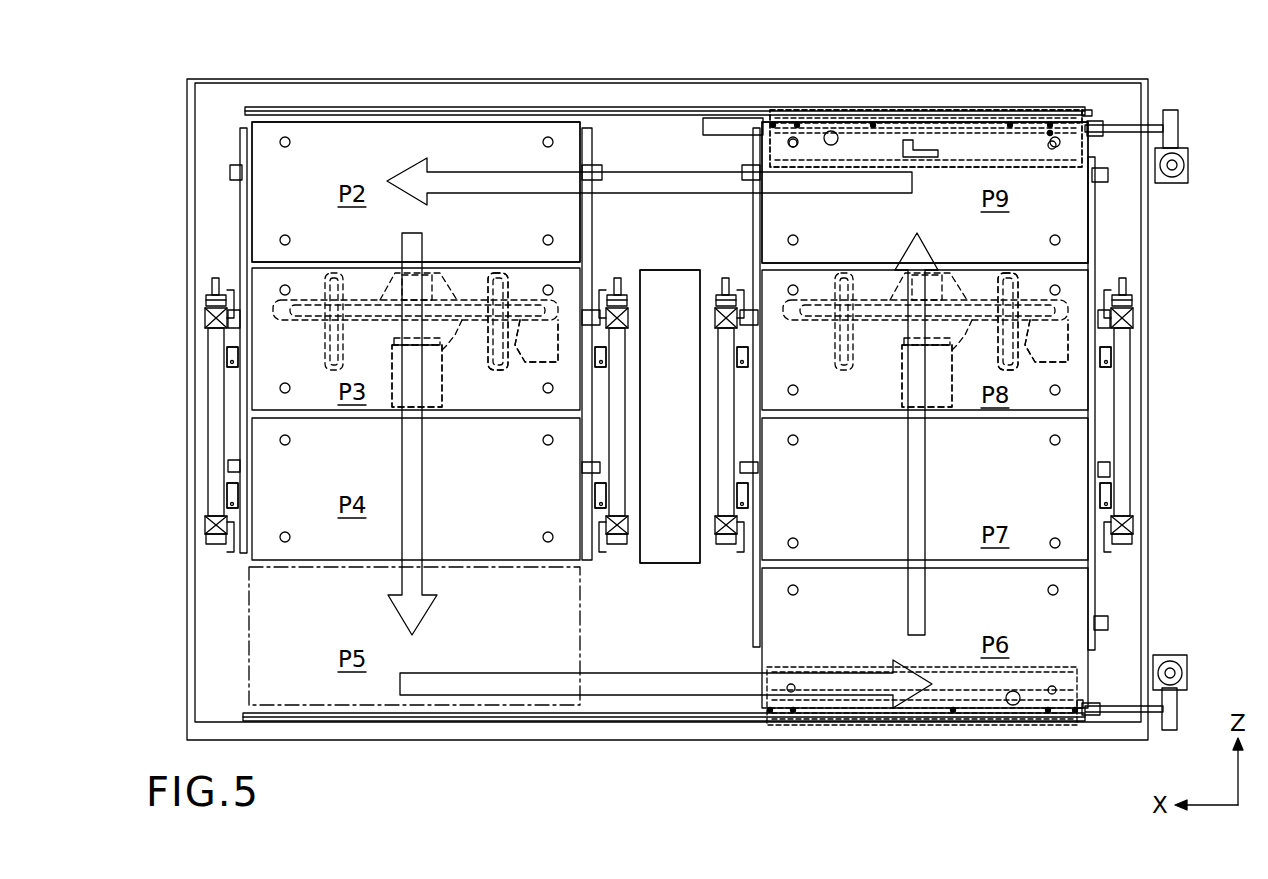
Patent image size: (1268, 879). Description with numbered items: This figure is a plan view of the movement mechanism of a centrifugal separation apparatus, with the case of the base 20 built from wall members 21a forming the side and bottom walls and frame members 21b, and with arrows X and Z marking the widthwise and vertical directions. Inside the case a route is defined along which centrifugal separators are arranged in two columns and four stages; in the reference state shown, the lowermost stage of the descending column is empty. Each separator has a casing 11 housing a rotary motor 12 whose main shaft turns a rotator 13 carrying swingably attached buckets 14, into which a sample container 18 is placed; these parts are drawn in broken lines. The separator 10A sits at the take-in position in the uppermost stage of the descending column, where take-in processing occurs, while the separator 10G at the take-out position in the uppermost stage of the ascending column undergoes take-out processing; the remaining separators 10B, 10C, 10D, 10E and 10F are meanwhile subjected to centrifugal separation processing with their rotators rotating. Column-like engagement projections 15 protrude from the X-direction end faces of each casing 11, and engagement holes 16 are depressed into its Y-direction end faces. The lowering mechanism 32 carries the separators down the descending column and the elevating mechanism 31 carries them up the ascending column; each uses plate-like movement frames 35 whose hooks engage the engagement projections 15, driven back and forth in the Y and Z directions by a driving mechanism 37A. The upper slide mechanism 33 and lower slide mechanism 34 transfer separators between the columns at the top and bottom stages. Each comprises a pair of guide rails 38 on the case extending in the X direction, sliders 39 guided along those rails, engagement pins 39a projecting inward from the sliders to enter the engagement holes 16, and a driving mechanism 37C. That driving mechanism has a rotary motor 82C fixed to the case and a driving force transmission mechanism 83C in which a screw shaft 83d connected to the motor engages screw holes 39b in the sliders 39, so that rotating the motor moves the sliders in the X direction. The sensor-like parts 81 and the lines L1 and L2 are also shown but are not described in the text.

The centrifugal separator 10A is at (293, 195).
The centrifugal separator 10B is at (295, 348).
The centrifugal separator 10C is at (355, 565).
The centrifugal separator 10D is at (1040, 622).
The centrifugal separator 10E is at (1040, 470).
The centrifugal separator 10F is at (1045, 350).
The centrifugal separator 10G is at (1045, 200).
The casing 11 is at (375, 155).
The rotary motor 12 is at (442, 390).
The rotator 13 is at (670, 340).
The bucket 14 is at (1030, 372).
The engagement projection 15 is at (236, 165).
The engagement hole 16 is at (290, 140).
The sample container 18 is at (505, 350).
The base 20 is at (937, 92).
The wall member 21a is at (188, 636).
The frame member 21b is at (672, 563).
The elevating mechanism 31 is at (722, 280).
The lowering mechanism 32 is at (215, 450).
The upper slide mechanism 33 is at (877, 110).
The lower slide mechanism 34 is at (943, 690).
The movement frame 35 is at (248, 545).
The driving mechanism 37A is at (243, 420).
The driving mechanism 37C is at (1180, 128).
The guide rail 38 is at (672, 107).
The slider 39 is at (1000, 145).
The engagement pin 39a is at (787, 120).
The screw hole 39b is at (958, 690).
The sensor 81 is at (230, 500).
The rotary motor 82C is at (1190, 165).
The driving force transmission mechanism 83C is at (1085, 715).
The screw shaft 83d is at (1094, 712).
The line L1 is at (565, 283).
The line L2 is at (780, 283).